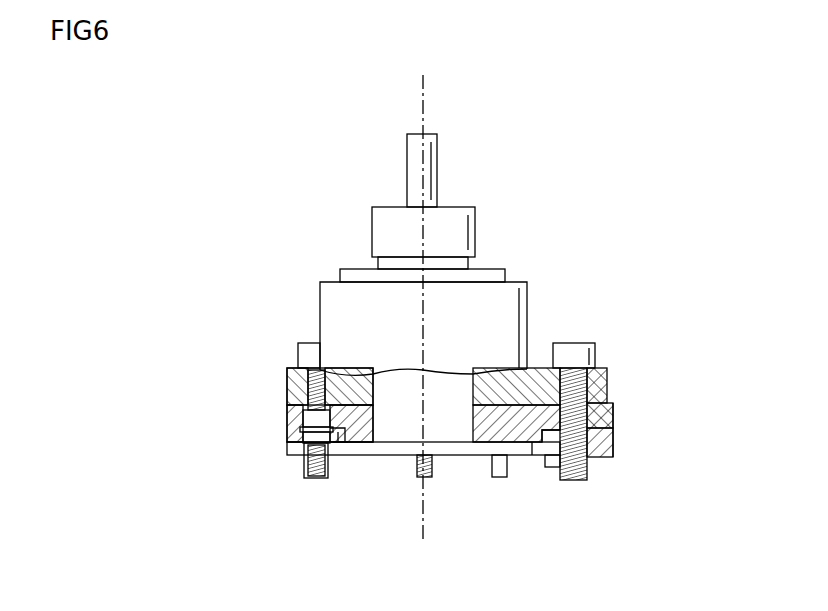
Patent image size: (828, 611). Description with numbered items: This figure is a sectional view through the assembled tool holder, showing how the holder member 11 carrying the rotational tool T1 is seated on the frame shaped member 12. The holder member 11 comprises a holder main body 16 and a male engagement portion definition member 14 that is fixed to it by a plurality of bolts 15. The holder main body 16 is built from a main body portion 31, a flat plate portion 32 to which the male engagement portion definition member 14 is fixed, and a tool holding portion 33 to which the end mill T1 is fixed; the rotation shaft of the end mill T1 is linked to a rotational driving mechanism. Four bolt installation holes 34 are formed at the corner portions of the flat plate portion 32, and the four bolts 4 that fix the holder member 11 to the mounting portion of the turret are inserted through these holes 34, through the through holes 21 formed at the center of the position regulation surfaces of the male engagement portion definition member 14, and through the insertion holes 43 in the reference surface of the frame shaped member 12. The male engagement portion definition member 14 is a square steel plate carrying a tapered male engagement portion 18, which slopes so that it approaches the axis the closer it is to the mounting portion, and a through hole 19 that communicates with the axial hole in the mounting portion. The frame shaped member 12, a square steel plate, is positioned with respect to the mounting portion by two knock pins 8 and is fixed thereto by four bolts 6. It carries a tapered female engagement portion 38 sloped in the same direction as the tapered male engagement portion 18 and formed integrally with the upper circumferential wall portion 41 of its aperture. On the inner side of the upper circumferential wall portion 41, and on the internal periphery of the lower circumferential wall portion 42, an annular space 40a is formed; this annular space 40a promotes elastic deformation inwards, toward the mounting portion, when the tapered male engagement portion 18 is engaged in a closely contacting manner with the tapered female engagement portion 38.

The rotational tool T1 is at (432, 134).
The holder member 11 is at (572, 175).
The tool holding portion 33 is at (372, 240).
The holder main body 16 is at (530, 283).
The main body portion 31 is at (320, 315).
The bolt 4 is at (302, 358).
The flat plate portion 32 is at (287, 388).
The bolt 15 is at (303, 420).
The bolt 6 is at (300, 438).
The tapered female engagement portion 38 is at (342, 437).
The tapered male engagement portion 18 is at (336, 443).
The frame shaped member 12 is at (615, 443).
The knock pin 8 is at (502, 477).
The bolt installation hole 34 is at (608, 380).
The through hole 19 is at (467, 420).
The through hole 21 is at (608, 420).
The male engagement portion definition member 14 is at (615, 402).
The insertion hole 43 is at (590, 458).
The lower circumferential wall portion 42 is at (548, 430).
The upper circumferential wall portion 41 is at (540, 445).
The annular space 40a is at (532, 447).